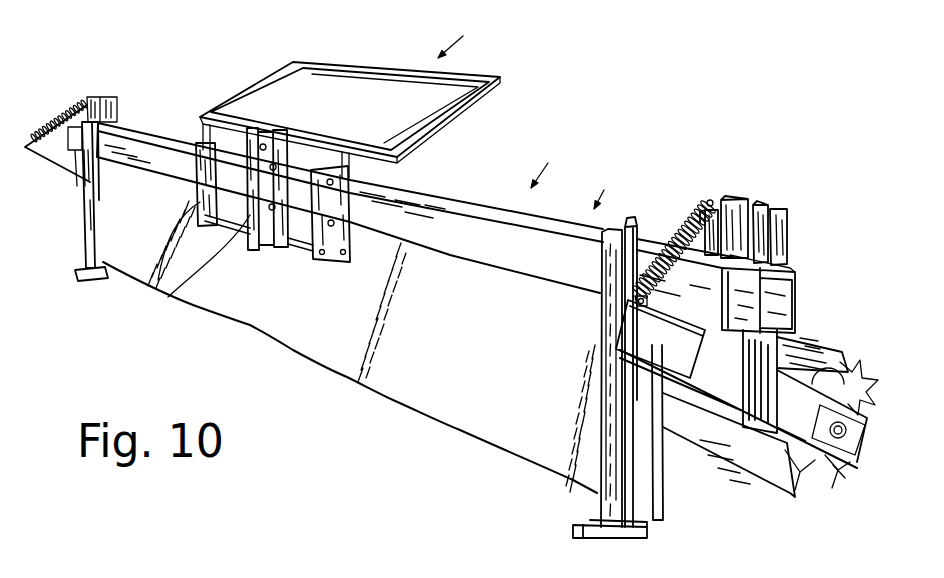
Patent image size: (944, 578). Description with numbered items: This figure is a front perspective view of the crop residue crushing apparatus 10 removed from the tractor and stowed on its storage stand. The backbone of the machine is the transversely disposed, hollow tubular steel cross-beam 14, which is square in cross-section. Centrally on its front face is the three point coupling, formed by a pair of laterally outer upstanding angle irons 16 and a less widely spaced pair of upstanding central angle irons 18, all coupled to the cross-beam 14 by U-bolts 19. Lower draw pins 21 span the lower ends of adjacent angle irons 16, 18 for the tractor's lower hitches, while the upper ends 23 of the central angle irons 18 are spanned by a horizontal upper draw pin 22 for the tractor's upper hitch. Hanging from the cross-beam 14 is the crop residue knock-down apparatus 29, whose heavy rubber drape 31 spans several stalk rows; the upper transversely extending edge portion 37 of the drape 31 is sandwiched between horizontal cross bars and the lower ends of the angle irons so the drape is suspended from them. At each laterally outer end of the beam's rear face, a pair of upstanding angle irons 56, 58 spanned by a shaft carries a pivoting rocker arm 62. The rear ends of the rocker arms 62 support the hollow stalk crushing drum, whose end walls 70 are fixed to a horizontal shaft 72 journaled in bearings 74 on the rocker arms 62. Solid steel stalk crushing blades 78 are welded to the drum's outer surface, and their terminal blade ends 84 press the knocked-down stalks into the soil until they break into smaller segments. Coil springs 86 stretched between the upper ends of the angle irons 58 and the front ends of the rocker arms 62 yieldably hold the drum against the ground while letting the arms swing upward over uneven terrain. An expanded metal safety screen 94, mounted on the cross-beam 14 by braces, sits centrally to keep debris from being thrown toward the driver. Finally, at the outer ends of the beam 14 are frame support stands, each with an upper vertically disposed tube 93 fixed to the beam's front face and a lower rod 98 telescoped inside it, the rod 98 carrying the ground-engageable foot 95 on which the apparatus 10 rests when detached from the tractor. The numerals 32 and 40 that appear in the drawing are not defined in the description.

The apparatus 10 is at (557, 165).
The cross-beam 14 is at (432, 192).
The upstanding laterally outer angle irons 16 is at (203, 200).
The upstanding central angle irons 18 is at (207, 235).
The U-bolts 19 is at (392, 162).
The lower draw pins 21 is at (247, 235).
The upper draw pin 22 is at (237, 128).
The upper ends 23 is at (240, 127).
The crop residue knock-down apparatus 29 is at (611, 344).
The drape 31 is at (467, 348).
The plate 32 is at (72, 169).
The upper transversely extending edge portion 37 is at (455, 268).
The plate 40 is at (642, 355).
The upstanding angle iron 56 is at (200, 142).
The upstanding angle iron 58 is at (710, 196).
The rocker arm 62 is at (823, 430).
The end walls 70 is at (824, 385).
The horizontal shaft 72 is at (853, 438).
The bearings 74 is at (833, 465).
The stalk crushing blades 78 is at (806, 322).
The terminal blade ends 84 is at (853, 397).
The coil springs 86 is at (56, 126).
The upper vertically disposed tube 93 is at (630, 242).
The safety screen 94 is at (463, 38).
The ground-engageable foot 95 is at (567, 527).
The lower rod 98 is at (88, 242).